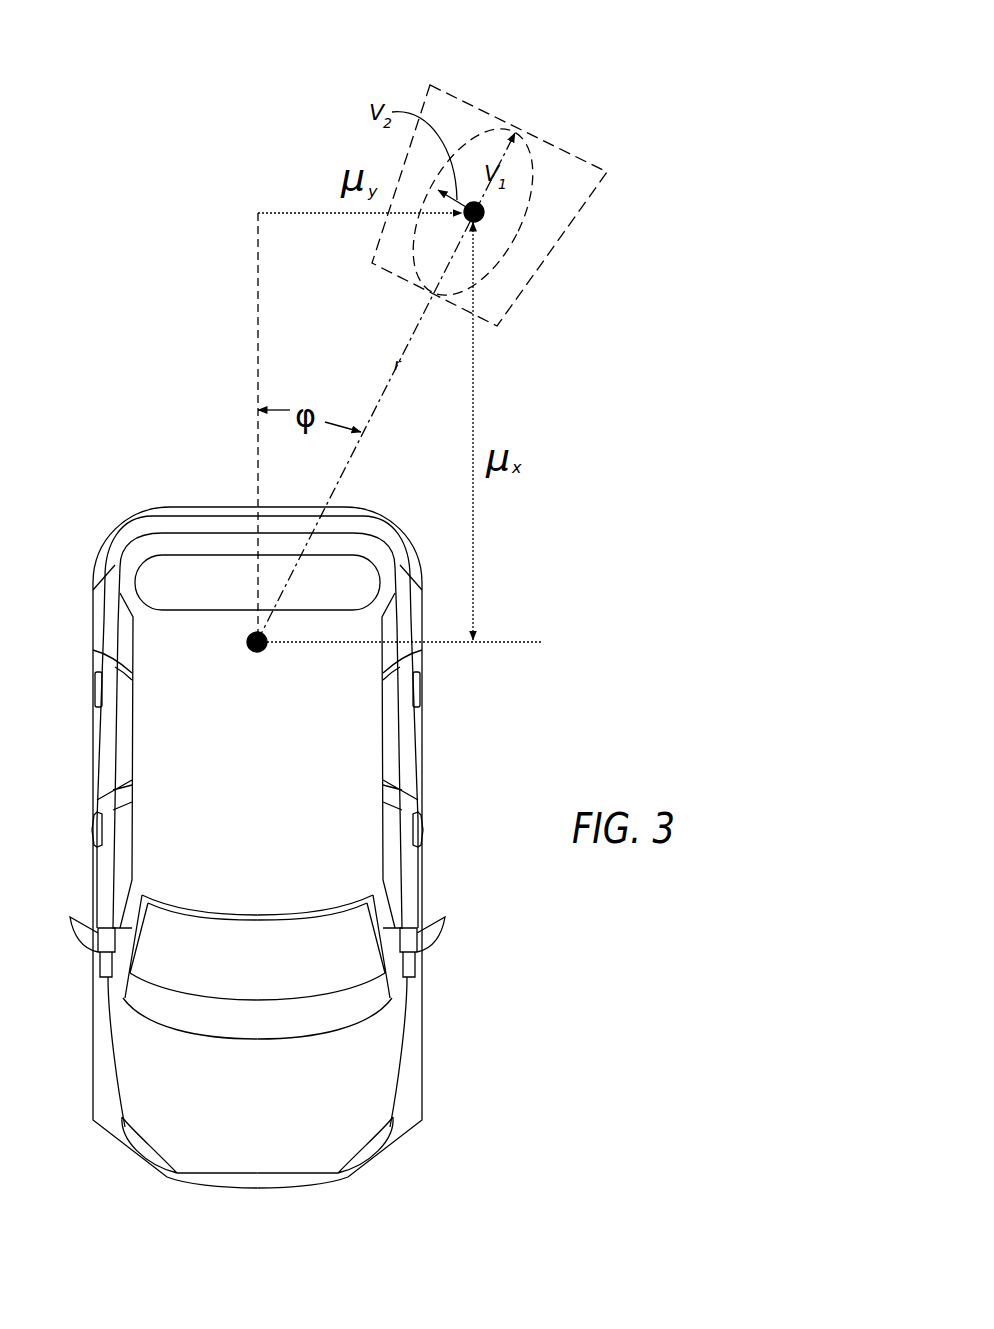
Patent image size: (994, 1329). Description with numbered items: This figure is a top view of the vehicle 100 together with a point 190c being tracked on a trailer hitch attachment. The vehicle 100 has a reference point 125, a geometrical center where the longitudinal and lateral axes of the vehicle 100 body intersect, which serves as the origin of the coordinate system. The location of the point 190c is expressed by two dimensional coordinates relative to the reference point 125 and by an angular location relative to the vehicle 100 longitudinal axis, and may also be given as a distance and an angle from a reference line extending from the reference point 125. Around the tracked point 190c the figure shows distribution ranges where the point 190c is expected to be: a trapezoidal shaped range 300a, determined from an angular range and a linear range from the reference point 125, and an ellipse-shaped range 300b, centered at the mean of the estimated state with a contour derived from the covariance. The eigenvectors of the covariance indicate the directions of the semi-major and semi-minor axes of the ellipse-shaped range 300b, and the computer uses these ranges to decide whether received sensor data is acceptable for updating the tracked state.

The vehicle 100 is at (261, 1117).
The reference point 125 is at (255, 652).
The point 190c is at (484, 209).
The trapezoidal shaped range 300a is at (462, 102).
The ellipse-shaped range 300b is at (533, 182).